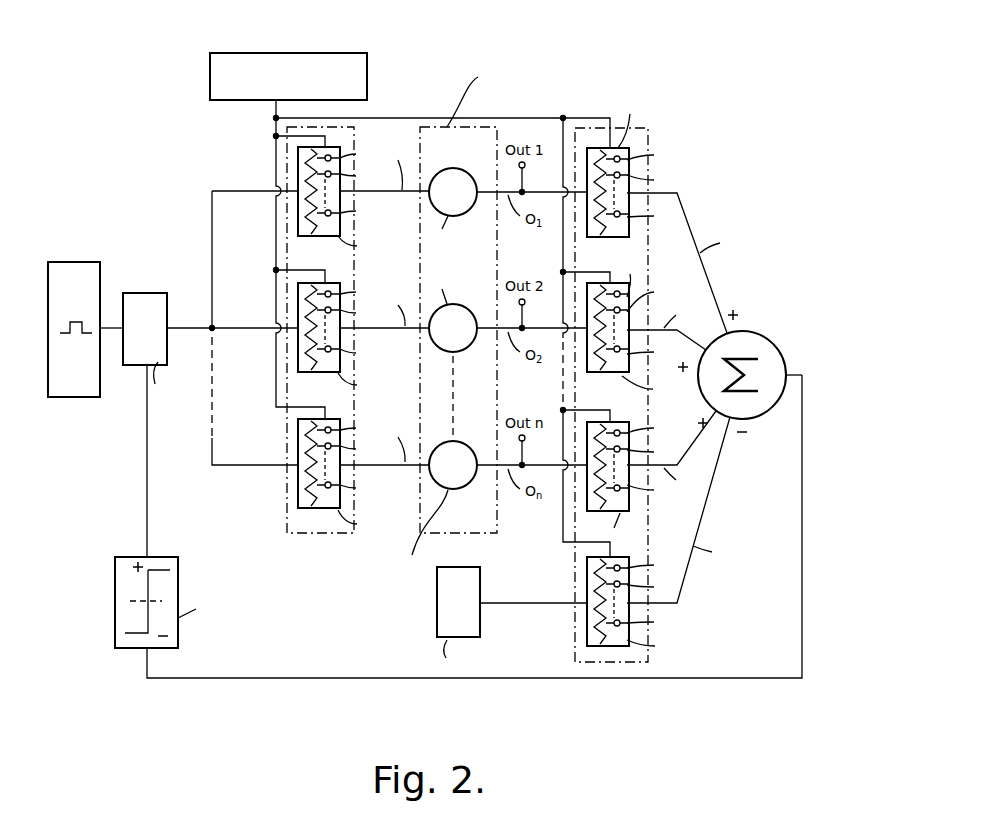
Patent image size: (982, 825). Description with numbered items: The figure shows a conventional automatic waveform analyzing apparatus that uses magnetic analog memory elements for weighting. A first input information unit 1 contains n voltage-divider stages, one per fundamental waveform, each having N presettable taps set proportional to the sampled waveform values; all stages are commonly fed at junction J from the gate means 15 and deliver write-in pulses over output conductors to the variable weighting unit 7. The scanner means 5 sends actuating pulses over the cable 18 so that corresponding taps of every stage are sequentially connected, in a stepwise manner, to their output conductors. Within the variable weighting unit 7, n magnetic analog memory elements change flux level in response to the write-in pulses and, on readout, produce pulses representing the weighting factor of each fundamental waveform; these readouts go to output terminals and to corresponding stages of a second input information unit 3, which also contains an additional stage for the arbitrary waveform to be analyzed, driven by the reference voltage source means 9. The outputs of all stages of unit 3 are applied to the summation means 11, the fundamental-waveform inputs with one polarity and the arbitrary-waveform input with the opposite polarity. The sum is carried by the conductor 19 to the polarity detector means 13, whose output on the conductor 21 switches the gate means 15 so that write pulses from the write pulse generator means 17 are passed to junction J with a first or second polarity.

The first input information unit 1 is at (357, 138).
The second input information unit 3 is at (650, 135).
The scanner means 5 is at (297, 53).
The variable weighting unit 7 is at (500, 142).
The reference voltage source means 9 is at (437, 600).
The summation means 11 is at (763, 332).
The polarity detector means 13 is at (115, 610).
The gate means 15 is at (150, 293).
The write pulse generator means 17 is at (70, 262).
The cable 18 is at (276, 105).
The conductor 19 is at (490, 678).
The conductor 21 is at (147, 492).